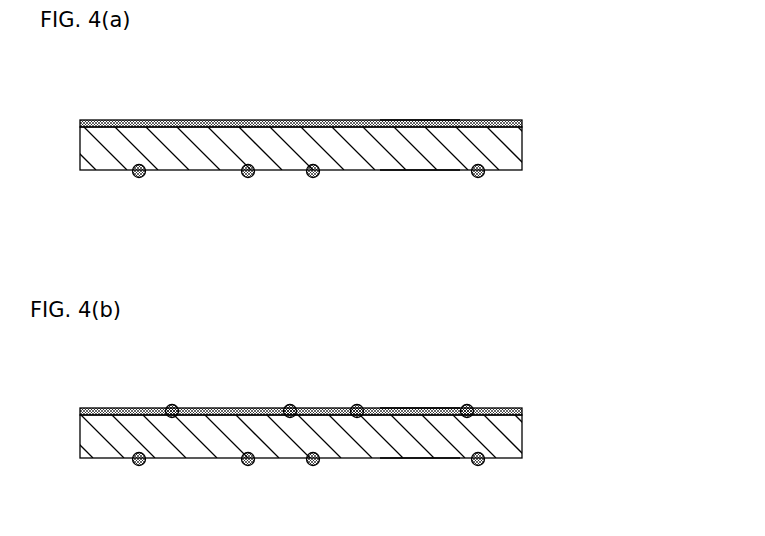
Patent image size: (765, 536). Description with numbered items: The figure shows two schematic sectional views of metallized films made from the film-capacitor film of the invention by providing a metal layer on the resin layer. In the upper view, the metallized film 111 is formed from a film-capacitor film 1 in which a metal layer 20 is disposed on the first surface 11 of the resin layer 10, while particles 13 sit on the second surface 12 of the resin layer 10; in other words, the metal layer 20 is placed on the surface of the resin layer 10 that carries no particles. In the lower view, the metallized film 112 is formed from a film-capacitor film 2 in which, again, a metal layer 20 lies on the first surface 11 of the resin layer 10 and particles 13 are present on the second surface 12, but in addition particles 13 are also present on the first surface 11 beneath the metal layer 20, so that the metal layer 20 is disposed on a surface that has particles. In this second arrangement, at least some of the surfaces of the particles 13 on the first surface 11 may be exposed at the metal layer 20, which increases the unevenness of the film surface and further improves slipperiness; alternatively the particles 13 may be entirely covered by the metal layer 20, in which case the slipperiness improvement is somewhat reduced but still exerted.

In FIG. 4A, the film-capacitor film 1 is at (316, 147).
In FIG. 4B, the film-capacitor film 2 is at (315, 434).
In FIG. 4A, the resin layer 10 is at (522, 152).
In FIG. 4B, the resin layer 10 is at (315, 436).
In FIG. 4A, the first surface 11 is at (420, 120).
In FIG. 4B, the first surface 11 is at (420, 379).
In FIG. 4A, the second surface 12 is at (412, 170).
In FIG. 4B, the second surface 12 is at (420, 489).
In FIG. 4A, the particles 13 is at (245, 178).
In FIG. 4B, the particles 13 is at (309, 436).
In FIG. 4A, the metal layer 20 is at (522, 123).
In FIG. 4B, the metal layer 20 is at (330, 405).
In FIG. 4A, the metallized film 111 is at (347, 135).
In FIG. 4B, the metallized film 112 is at (345, 422).